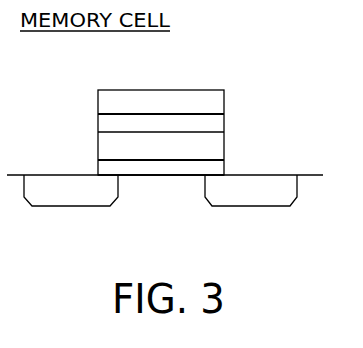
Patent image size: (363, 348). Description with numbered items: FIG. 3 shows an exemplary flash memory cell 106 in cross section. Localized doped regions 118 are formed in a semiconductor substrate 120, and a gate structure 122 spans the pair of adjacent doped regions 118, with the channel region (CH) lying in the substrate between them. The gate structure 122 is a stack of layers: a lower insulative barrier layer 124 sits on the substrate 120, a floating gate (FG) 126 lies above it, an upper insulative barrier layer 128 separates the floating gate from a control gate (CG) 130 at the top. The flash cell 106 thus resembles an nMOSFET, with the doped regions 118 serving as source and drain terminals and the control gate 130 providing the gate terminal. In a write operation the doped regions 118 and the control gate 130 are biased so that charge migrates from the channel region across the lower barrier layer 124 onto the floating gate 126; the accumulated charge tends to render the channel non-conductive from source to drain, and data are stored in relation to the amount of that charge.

The flash memory cell 106 is at (233, 56).
The localized doped regions 118 is at (50, 206).
The semiconductor substrate 120 is at (260, 243).
The gate structure 122 is at (243, 130).
The lower insulative barrier layer 124 is at (98, 167).
The floating gate 126 is at (98, 147).
The upper insulative barrier layer 128 is at (98, 126).
The control gate 130 is at (98, 103).